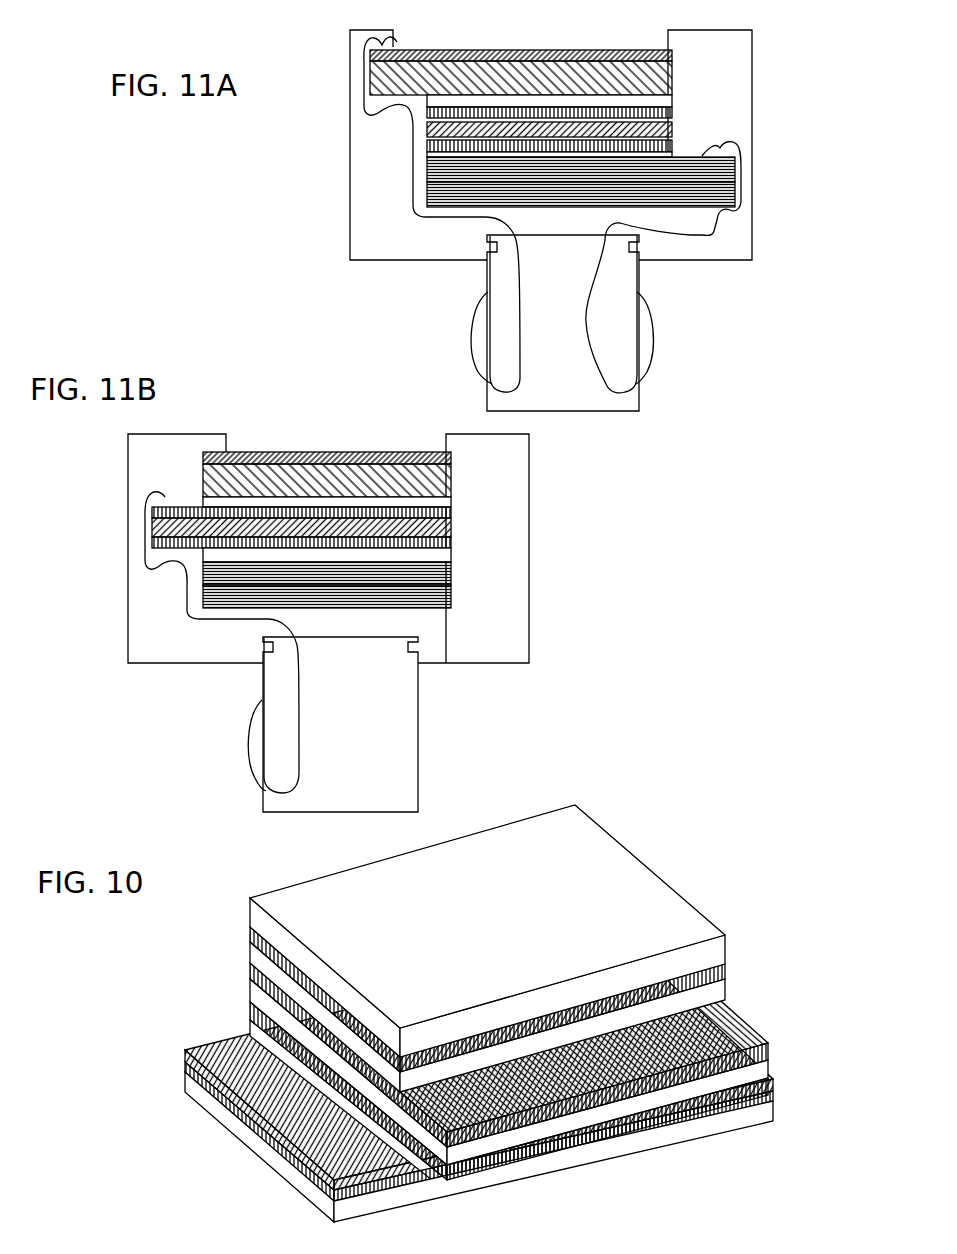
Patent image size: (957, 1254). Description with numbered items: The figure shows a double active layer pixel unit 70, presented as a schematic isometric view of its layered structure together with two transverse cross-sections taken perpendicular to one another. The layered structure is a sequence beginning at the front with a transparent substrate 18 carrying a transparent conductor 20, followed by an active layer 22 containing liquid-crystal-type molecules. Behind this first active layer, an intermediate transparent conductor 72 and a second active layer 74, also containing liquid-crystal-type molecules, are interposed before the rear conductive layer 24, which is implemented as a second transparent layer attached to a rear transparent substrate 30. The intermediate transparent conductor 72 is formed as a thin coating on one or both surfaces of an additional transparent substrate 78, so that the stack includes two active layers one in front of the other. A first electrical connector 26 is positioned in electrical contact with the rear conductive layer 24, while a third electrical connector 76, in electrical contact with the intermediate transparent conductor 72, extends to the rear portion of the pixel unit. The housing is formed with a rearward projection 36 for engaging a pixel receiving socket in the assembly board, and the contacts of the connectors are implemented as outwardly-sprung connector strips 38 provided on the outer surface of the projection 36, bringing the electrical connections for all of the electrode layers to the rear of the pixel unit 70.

In FIG. 11A, the transparent substrate 18 is at (670, 57).
In FIG. 11B, the transparent substrate 18 is at (453, 460).
In FIG. 10, the transparent substrate 18 is at (650, 905).
In FIG. 11A, the transparent conductor 20 is at (670, 78).
In FIG. 11B, the transparent conductor 20 is at (442, 482).
In FIG. 10, the transparent conductor 20 is at (708, 975).
In FIG. 11A, the active layer 22 is at (670, 103).
In FIG. 11B, the active layer 22 is at (447, 500).
In FIG. 10, the active layer 22 is at (712, 992).
In FIG. 11A, the rear conductive layer 24 is at (430, 168).
In FIG. 11B, the rear conductive layer 24 is at (450, 570).
In FIG. 10, the rear conductive layer 24 is at (186, 1068).
In FIG. 11A, the first electrical connector 26 is at (363, 67).
In FIG. 11A, the rear transparent substrate 30 is at (460, 197).
In FIG. 11B, the rear transparent substrate 30 is at (450, 605).
In FIG. 10, the rear transparent substrate 30 is at (248, 1128).
In FIG. 11A, the rearward projection 36 is at (590, 396).
In FIG. 11B, the rearward projection 36 is at (380, 762).
In FIG. 11A, the connector strips 38 is at (654, 318).
In FIG. 11B, the connector strips 38 is at (248, 740).
In FIG. 10, the pixel unit 70 is at (471, 989).
In FIG. 11A, the intermediate transparent conductor 72 is at (670, 115).
In FIG. 11B, the intermediate transparent conductor 72 is at (450, 510).
In FIG. 10, the intermediate transparent conductor 72 is at (722, 1030).
In FIG. 11A, the second active layer 74 is at (450, 155).
In FIG. 11B, the second active layer 74 is at (438, 557).
In FIG. 10, the second active layer 74 is at (250, 1026).
In FIG. 11B, the third electrical connector 76 is at (217, 620).
In FIG. 11A, the additional transparent substrate 78 is at (670, 128).
In FIG. 11B, the additional transparent substrate 78 is at (450, 523).
In FIG. 10, the additional transparent substrate 78 is at (745, 1070).